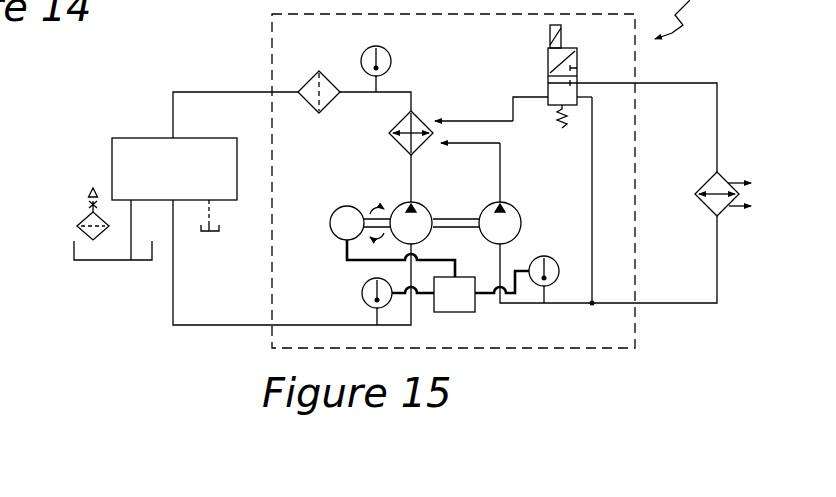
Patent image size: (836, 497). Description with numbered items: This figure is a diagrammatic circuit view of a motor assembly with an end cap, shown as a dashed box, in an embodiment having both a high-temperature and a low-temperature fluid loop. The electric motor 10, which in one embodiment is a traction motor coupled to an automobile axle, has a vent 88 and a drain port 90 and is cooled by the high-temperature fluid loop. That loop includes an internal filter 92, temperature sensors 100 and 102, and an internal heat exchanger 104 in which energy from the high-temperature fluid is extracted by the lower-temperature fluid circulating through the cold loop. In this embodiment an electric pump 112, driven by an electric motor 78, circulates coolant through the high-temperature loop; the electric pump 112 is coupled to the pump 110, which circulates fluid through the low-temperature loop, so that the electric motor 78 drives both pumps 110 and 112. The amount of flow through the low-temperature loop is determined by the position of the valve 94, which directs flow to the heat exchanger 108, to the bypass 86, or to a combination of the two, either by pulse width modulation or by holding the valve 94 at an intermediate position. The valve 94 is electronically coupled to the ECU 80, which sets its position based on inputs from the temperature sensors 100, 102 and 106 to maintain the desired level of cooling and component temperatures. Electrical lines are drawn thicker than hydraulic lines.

The electric motor 10 is at (130, 138).
The vent 88 is at (95, 262).
The drain port 90 is at (200, 233).
The filter 92 is at (304, 74).
The temperature sensor 102 is at (366, 49).
The heat exchanger 104 is at (422, 120).
The valve 94 is at (548, 65).
The bypass 86 is at (595, 184).
The heat exchanger 108 is at (719, 176).
The electric motor 78 is at (333, 232).
The electric pump 112 is at (429, 210).
The pump 110 is at (519, 215).
The temperature sensor 106 is at (533, 259).
The temperature sensor 100 is at (366, 304).
The ECU 80 is at (442, 305).